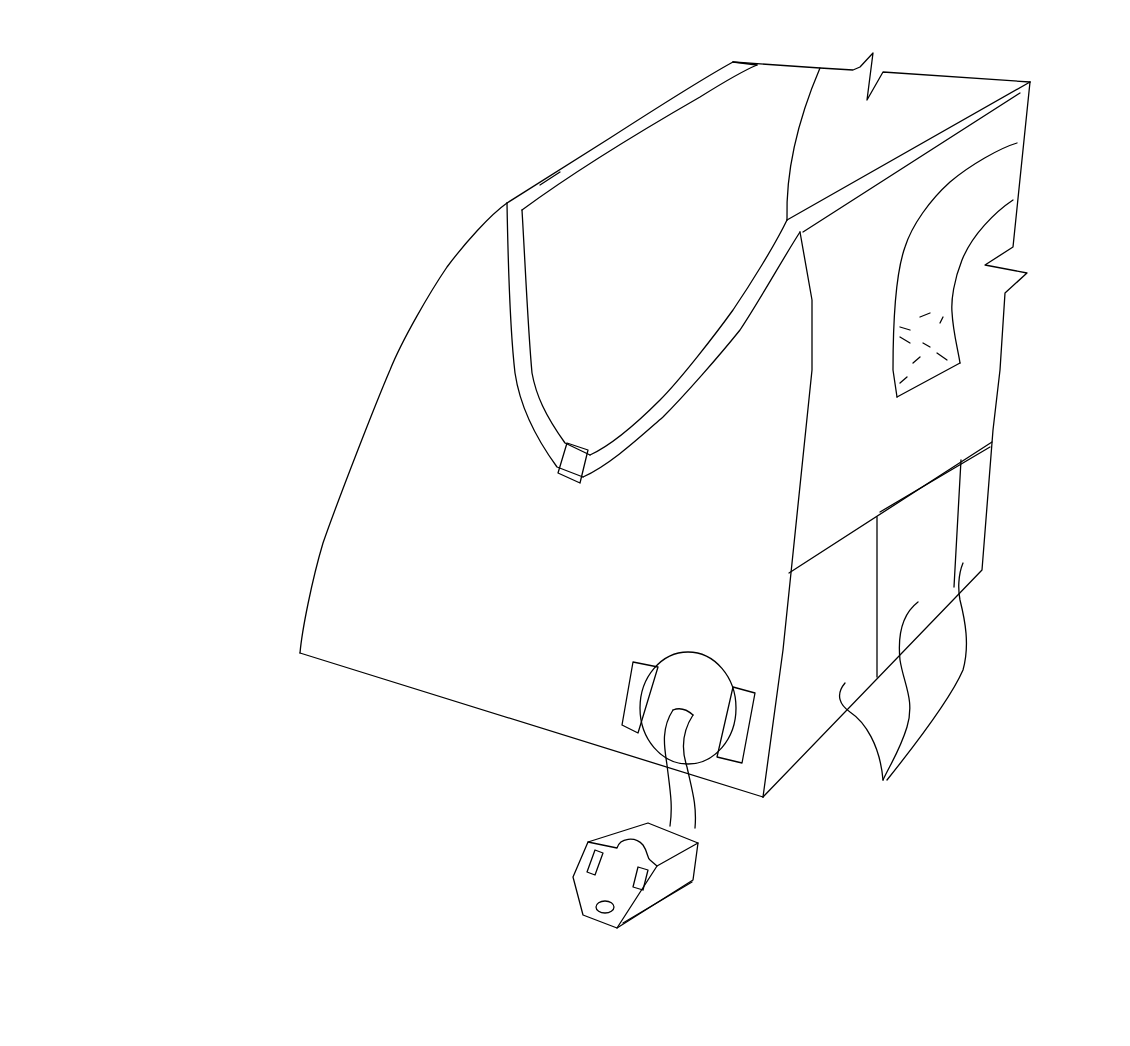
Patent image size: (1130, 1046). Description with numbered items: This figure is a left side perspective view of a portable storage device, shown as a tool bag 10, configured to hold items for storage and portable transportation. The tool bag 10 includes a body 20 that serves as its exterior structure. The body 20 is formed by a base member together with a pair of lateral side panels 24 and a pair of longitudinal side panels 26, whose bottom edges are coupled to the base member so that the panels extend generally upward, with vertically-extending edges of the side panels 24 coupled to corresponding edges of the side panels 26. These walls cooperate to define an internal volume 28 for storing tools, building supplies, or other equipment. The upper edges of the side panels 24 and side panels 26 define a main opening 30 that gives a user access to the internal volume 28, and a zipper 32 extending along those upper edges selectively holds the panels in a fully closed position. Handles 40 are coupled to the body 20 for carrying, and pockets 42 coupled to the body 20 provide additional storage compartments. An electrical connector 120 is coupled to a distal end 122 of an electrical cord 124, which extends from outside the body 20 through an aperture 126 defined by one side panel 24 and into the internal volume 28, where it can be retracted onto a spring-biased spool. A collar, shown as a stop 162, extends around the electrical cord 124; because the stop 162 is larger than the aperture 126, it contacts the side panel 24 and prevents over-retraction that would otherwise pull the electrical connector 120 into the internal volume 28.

The tool bag 10 is at (137, 177).
The body 20 is at (365, 300).
The side panels 24 is at (965, 103).
The side panels 26 is at (608, 213).
The internal volume 28 is at (592, 303).
The main opening 30 is at (620, 102).
The zipper 32 is at (647, 425).
The handles 40 is at (980, 197).
The pockets 42 is at (903, 694).
The electrical connector 120 is at (693, 873).
The distal end 122 is at (630, 808).
The electrical cord 124 is at (688, 813).
The aperture 126 is at (640, 657).
The stops 162 is at (703, 677).